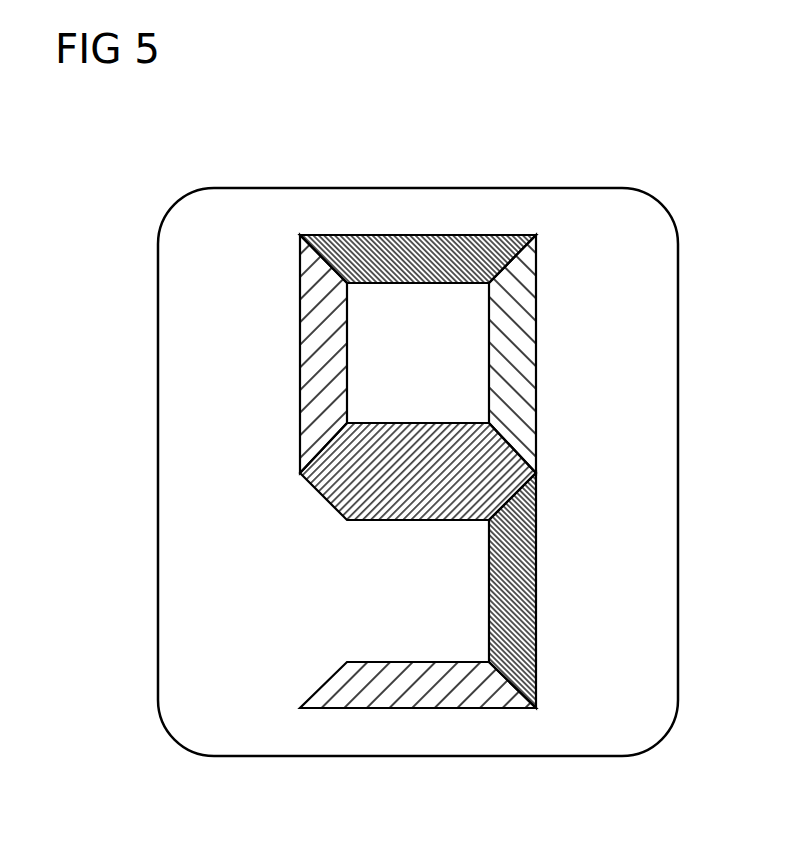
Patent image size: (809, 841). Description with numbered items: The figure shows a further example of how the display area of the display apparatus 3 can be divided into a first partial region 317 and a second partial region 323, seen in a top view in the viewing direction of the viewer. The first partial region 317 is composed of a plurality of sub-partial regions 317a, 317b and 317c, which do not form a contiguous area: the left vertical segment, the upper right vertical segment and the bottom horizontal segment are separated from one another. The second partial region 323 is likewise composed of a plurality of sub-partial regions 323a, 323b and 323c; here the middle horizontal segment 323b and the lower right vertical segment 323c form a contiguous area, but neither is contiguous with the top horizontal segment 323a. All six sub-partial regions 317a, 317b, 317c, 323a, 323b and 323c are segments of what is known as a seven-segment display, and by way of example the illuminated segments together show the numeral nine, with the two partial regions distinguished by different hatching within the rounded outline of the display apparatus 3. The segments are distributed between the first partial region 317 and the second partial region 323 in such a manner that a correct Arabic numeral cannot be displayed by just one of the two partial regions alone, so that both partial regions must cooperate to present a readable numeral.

The display apparatus 3 is at (686, 164).
The first partial region 317 is at (419, 529).
The sub-partial region 317a is at (317, 380).
The sub-partial region 317b is at (515, 374).
The sub-partial region 317c is at (433, 690).
The second partial region 323 is at (418, 415).
The sub-partial region 323a is at (418, 253).
The sub-partial region 323b is at (380, 495).
The sub-partial region 323c is at (523, 628).